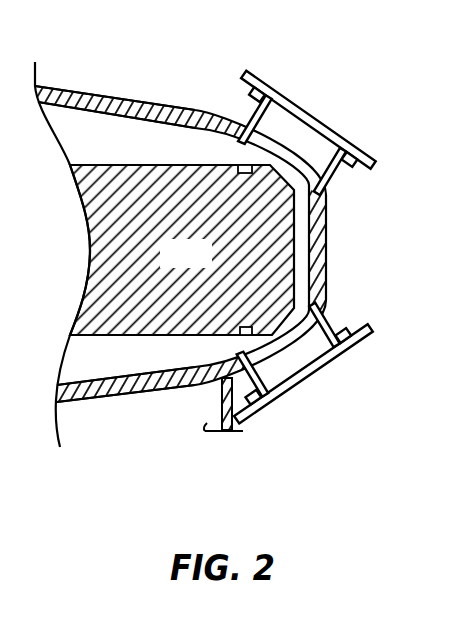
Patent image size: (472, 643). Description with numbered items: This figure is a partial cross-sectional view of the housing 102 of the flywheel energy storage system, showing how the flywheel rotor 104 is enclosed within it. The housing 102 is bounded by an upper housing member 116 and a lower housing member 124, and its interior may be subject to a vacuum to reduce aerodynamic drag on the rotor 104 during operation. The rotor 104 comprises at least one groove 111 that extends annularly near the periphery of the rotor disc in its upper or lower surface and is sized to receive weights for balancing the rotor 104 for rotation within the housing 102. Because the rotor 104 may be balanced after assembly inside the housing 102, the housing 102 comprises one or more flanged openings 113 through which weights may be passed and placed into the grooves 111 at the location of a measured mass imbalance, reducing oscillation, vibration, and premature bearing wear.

The housing 102 is at (326, 233).
The flywheel rotor 104 is at (207, 266).
The groove 111 is at (236, 344).
The flanged opening 113 is at (329, 379).
The upper housing member 116 is at (108, 96).
The lower housing member 124 is at (113, 388).